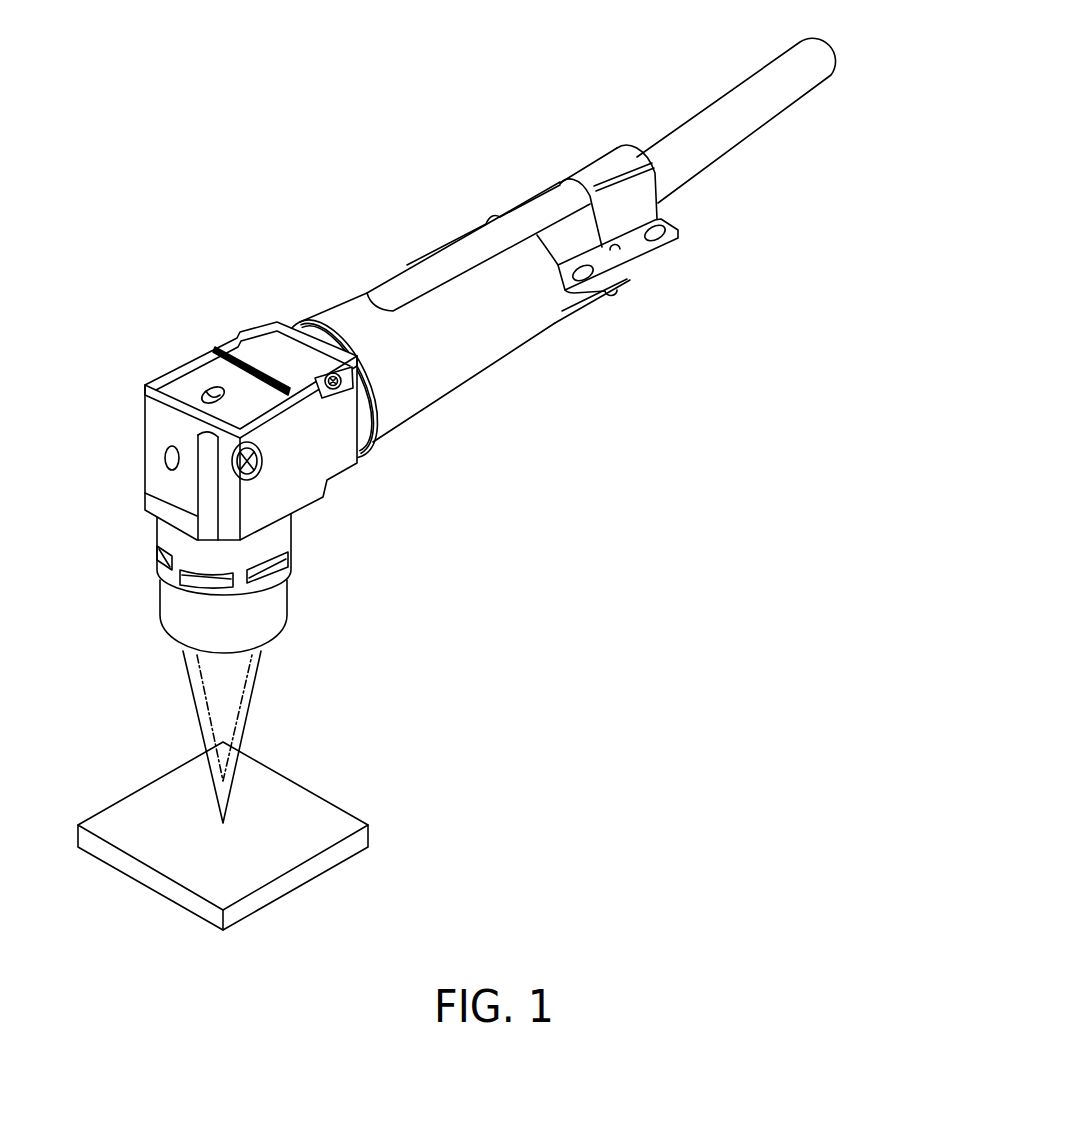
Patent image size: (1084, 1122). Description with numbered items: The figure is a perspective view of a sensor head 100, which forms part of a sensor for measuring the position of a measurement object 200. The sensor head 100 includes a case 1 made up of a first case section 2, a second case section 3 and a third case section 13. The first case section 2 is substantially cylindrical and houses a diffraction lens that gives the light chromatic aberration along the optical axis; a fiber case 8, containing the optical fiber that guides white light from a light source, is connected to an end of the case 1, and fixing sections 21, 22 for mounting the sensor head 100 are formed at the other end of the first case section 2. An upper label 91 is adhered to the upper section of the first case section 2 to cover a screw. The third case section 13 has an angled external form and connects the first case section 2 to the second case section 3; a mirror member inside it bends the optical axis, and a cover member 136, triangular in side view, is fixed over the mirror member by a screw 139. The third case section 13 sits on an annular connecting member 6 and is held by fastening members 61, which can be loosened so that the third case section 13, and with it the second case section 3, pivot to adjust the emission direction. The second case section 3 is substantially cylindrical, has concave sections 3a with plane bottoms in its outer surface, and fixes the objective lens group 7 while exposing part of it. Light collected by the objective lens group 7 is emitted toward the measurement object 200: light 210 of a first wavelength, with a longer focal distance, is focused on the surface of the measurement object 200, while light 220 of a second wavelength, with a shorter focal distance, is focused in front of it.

The sensor head 100 is at (449, 331).
The case 1 is at (328, 417).
The first case section 2 is at (420, 342).
The second case section 3 is at (232, 532).
The concave sections 3a is at (157, 553).
The connecting member 6 is at (314, 336).
The fastening members 61 is at (336, 372).
The objective lens group 7 is at (168, 644).
The fiber case 8 is at (716, 97).
The third case section 13 is at (243, 386).
The cover member 136 is at (176, 387).
The screw 139 is at (233, 466).
The fixing section 21 is at (643, 266).
The fixing section 22 is at (514, 205).
The upper label 91 is at (404, 288).
The measurement object 200 is at (300, 822).
The light having a first wavelength 210 is at (200, 737).
The light having a second wavelength 220 is at (240, 730).